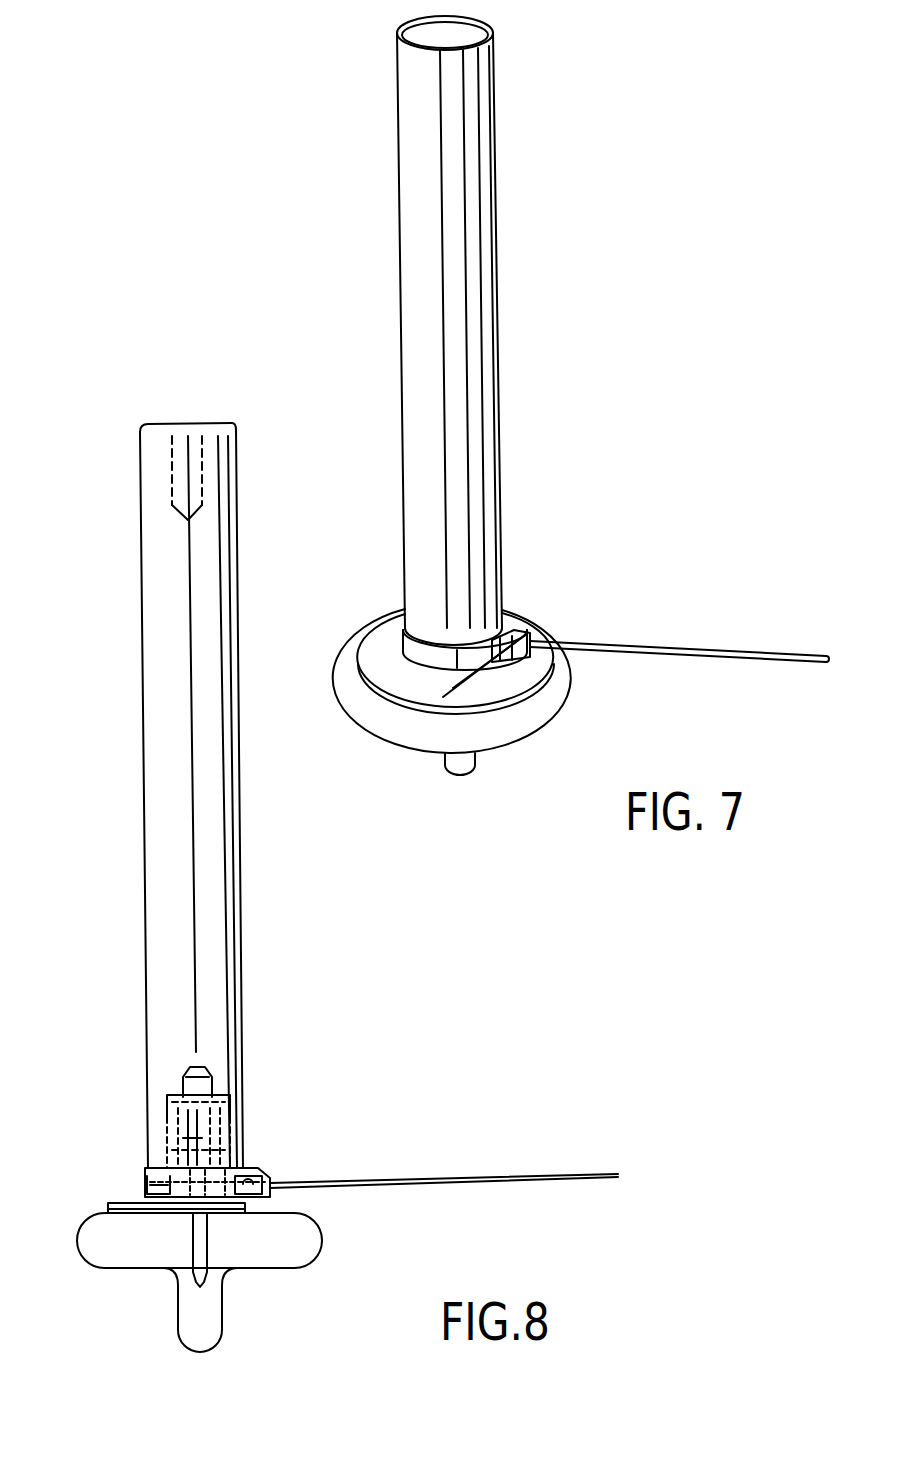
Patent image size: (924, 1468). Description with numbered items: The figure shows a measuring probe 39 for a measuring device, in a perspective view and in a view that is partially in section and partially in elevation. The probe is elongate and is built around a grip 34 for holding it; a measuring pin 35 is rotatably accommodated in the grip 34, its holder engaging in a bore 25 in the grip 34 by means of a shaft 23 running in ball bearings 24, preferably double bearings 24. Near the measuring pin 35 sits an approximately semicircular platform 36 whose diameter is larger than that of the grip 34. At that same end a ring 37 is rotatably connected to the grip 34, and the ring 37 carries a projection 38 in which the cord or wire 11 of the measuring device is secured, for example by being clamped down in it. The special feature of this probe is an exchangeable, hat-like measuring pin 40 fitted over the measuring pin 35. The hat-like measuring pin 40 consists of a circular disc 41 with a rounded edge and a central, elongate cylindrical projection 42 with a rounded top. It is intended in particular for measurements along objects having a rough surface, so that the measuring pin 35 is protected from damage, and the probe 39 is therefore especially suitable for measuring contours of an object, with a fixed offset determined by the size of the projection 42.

In FIG. 7, the wire 11 is at (660, 647).
In FIG. 8, the wire 11 is at (510, 1177).
In FIG. 8, the shaft 23 is at (197, 1138).
In FIG. 8, the ball bearings 24 is at (217, 1118).
In FIG. 8, the bore 25 is at (203, 1081).
In FIG. 7, the grip 34 is at (497, 153).
In FIG. 8, the grip 34 is at (236, 573).
In FIG. 8, the measuring pin 35 is at (197, 1280).
In FIG. 7, the semicircular platform 36 is at (395, 672).
In FIG. 8, the semicircular platform 36 is at (123, 1209).
In FIG. 7, the ring 37 is at (407, 646).
In FIG. 8, the ring 37 is at (148, 1168).
In FIG. 7, the projection 38 is at (527, 630).
In FIG. 8, the projection 38 is at (266, 1180).
In FIG. 7, the measuring probe 39 is at (475, 340).
In FIG. 8, the measuring probe 39 is at (215, 970).
In FIG. 7, the hat-like measuring pin 40 is at (390, 763).
In FIG. 8, the hat-like measuring pin 40 is at (348, 1232).
In FIG. 7, the circular disc 41 is at (540, 703).
In FIG. 8, the circular disc 41 is at (107, 1252).
In FIG. 7, the cylindrical projection 42 is at (470, 772).
In FIG. 8, the cylindrical projection 42 is at (200, 1328).